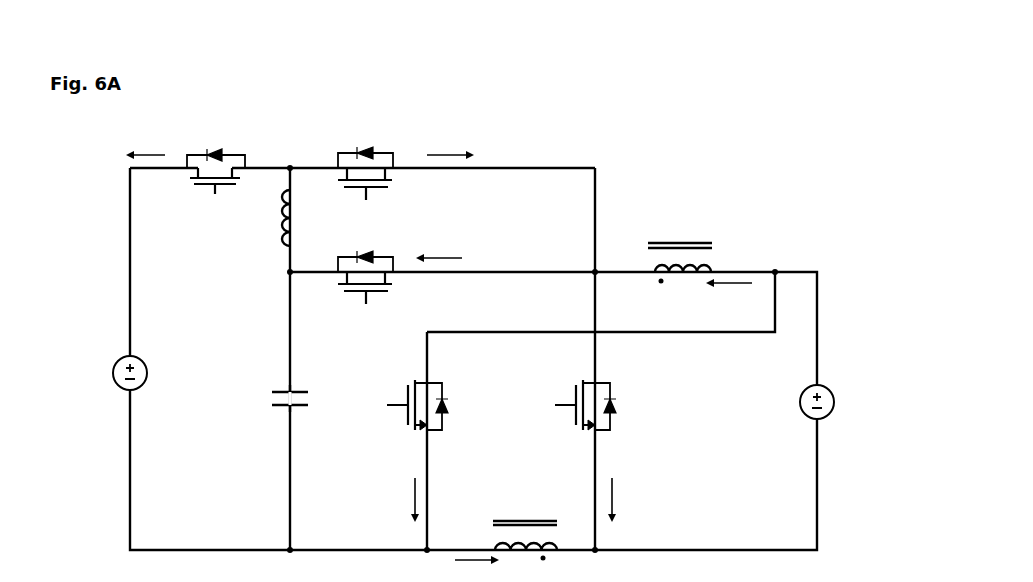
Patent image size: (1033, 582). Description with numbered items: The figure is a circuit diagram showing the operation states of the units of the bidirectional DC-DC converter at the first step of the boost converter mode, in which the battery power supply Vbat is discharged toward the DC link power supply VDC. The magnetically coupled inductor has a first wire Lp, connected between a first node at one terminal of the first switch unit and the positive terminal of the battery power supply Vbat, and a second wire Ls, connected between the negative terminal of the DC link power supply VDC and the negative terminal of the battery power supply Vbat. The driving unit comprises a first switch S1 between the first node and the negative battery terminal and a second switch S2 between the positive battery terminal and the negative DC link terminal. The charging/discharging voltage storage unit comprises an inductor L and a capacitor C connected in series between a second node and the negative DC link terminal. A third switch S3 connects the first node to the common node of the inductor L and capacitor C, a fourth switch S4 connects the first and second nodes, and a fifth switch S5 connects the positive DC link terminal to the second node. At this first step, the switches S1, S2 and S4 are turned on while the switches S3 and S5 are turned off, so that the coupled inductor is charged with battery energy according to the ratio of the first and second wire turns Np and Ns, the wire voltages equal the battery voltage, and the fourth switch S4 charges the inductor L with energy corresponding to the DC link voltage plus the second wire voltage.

The first switch S1 is at (595, 445).
The second switch S2 is at (426, 445).
The third switch S3 is at (398, 279).
The fourth switch S4 is at (403, 174).
The fifth switch S5 is at (186, 175).
The inductor L is at (267, 218).
The capacitor C is at (290, 405).
The first wire Lp is at (691, 267).
The second wire Ls is at (513, 527).
The first wire turns Np is at (725, 243).
The second wire turns Ns is at (464, 522).
The DC link power supply VDC is at (101, 374).
The battery power supply Vbat is at (835, 402).